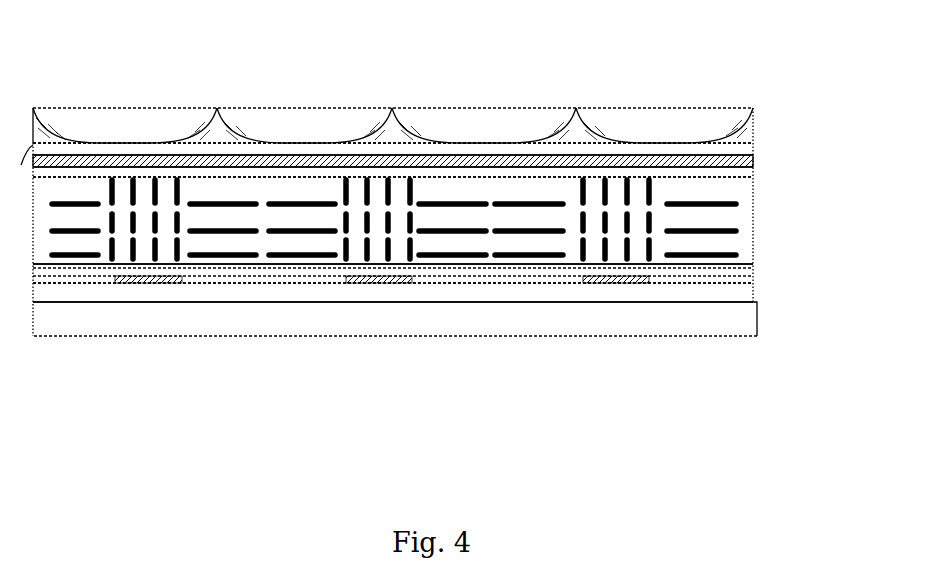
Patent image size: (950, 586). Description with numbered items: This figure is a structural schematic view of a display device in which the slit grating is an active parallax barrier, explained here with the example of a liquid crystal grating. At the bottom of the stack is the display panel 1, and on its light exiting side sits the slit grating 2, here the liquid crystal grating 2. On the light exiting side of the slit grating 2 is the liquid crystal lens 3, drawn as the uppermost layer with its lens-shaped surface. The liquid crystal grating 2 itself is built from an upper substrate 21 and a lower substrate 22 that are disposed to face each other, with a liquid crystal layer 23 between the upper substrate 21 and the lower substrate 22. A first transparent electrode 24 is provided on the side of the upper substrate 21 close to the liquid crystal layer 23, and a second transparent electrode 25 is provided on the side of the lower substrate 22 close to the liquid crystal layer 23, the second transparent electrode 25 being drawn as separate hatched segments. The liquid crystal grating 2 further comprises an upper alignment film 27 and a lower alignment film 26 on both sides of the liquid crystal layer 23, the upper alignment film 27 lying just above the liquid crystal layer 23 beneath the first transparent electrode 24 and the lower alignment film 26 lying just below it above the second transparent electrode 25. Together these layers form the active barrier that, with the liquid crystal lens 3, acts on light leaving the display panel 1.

The display panel 1 is at (302, 322).
The slit grating 2 is at (33, 293).
The liquid crystal lens 3 is at (755, 108).
The upper substrate 21 is at (755, 148).
The lower substrate 22 is at (755, 295).
The liquid crystal layer 23 is at (742, 233).
The first transparent electrode 24 is at (755, 160).
The second transparent electrode 25 is at (630, 283).
The lower alignment film 26 is at (755, 268).
The upper alignment film 27 is at (755, 171).